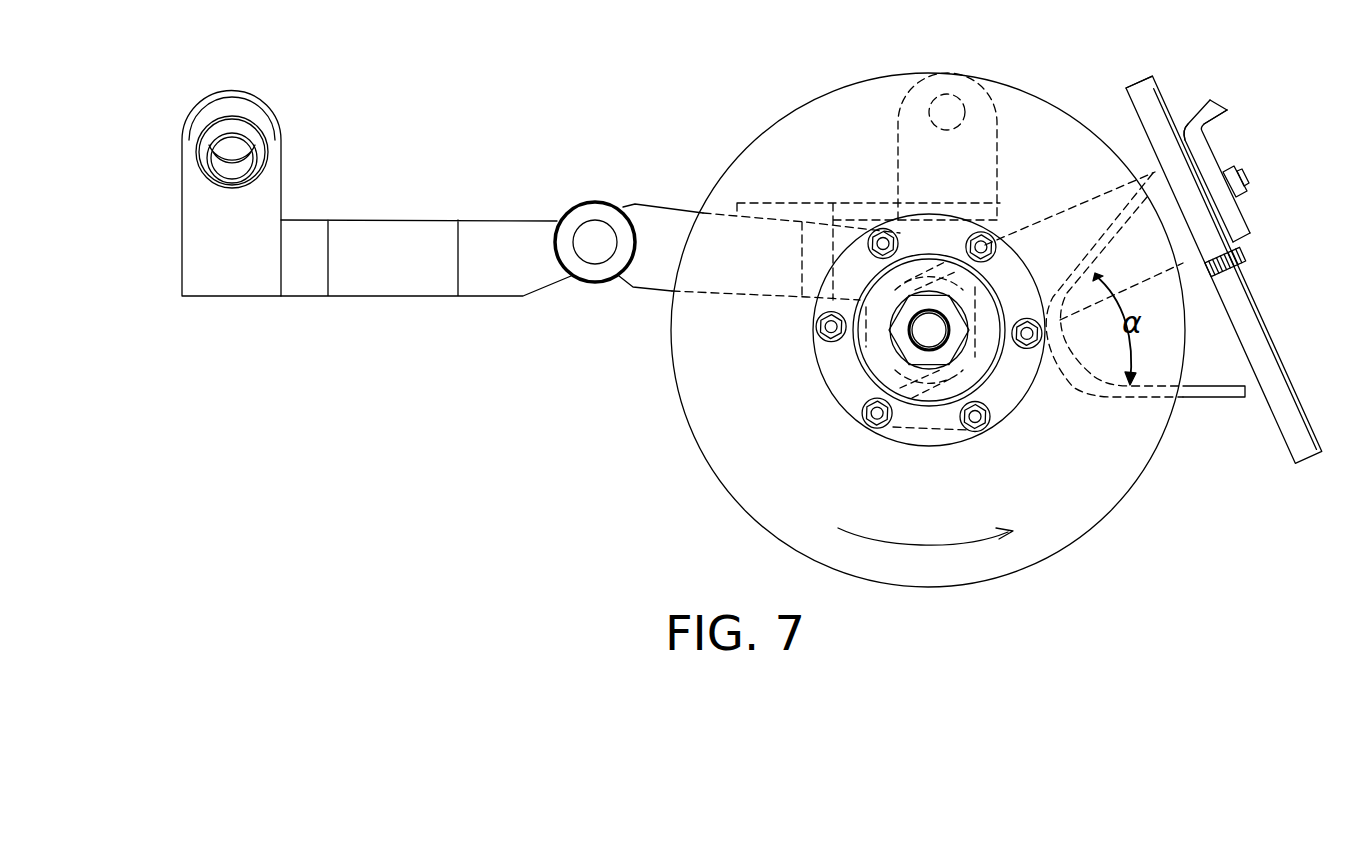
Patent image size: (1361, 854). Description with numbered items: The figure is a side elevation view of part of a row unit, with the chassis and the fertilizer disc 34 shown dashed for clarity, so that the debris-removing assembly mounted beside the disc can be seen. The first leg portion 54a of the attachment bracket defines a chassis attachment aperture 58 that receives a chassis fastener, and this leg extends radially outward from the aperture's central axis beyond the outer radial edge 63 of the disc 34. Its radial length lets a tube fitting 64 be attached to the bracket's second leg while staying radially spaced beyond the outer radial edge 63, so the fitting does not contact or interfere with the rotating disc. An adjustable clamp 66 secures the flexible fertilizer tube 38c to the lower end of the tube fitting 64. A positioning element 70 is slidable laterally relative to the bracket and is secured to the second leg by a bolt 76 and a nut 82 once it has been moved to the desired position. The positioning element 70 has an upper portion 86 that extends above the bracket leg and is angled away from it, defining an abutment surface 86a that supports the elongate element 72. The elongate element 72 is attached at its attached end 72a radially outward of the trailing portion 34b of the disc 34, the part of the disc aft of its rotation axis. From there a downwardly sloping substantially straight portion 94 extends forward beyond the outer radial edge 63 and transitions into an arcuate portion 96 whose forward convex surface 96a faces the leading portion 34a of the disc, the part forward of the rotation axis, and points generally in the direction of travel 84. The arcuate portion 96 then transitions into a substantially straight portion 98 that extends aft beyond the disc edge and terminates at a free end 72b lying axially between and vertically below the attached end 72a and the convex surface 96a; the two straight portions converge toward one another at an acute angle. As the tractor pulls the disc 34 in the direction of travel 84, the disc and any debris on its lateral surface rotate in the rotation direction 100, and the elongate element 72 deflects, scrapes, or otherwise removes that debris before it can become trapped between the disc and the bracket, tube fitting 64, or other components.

The fertilizer disc 34 is at (783, 513).
The leading portion 34a is at (707, 405).
The trailing portion 34b is at (1130, 462).
The fertilizer tube 38c is at (1262, 334).
The first leg portion 54a is at (1035, 233).
The chassis attachment aperture 58 is at (913, 340).
The outer radial edge 63 is at (1043, 103).
The tube fitting 64 is at (1140, 88).
The adjustable clamp 66 is at (1240, 257).
The positioning element 70 is at (1217, 160).
The elongate element 72 is at (1110, 248).
The attached end 72a is at (1208, 100).
The free end 72b is at (1230, 400).
The bolt 76 is at (1250, 185).
The nut 82 is at (1242, 202).
The direction of travel 84 is at (158, 250).
The upper portion 86 is at (1227, 113).
The abutment surface 86a is at (1230, 110).
The substantially straight portion 94 is at (1110, 227).
The arcuate portion 96 is at (1078, 367).
The forward convex surface 96a is at (1053, 377).
The substantially straight portion 98 is at (1140, 386).
The rotation direction 100 is at (920, 548).